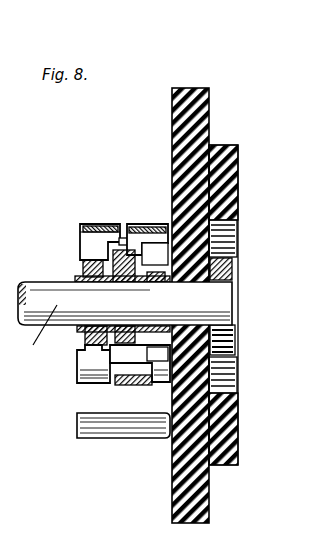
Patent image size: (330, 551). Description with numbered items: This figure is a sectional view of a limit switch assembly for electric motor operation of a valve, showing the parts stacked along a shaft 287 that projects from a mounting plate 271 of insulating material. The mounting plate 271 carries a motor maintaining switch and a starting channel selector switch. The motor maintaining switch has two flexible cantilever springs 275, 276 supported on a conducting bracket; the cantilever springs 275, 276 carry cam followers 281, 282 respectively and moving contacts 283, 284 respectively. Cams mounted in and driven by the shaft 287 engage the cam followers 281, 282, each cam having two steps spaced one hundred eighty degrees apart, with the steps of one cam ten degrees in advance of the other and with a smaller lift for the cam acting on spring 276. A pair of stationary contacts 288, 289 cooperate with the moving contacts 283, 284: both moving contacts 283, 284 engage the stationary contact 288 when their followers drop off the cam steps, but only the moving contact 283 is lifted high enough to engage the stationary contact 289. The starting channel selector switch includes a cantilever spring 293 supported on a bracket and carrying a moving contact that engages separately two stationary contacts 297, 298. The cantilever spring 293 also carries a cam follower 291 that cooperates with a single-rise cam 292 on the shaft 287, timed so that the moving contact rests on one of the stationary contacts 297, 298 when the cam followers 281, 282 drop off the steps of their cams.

The mounting plate 271 is at (172, 505).
The flexible cantilever spring 275 is at (142, 224).
The flexible cantilever spring 276 is at (103, 224).
The cam follower 281 is at (130, 282).
The cam follower 282 is at (92, 242).
The moving contact 283 is at (150, 262).
The moving contact 284 is at (83, 264).
The shaft 287 is at (29, 338).
The stationary contact 288 is at (60, 236).
The stationary contact 289 is at (119, 305).
The cam follower 291 is at (113, 380).
The cam 292 is at (108, 350).
The cantilever spring 293 is at (120, 375).
The stationary contact 297 is at (78, 372).
The stationary contact 298 is at (103, 433).